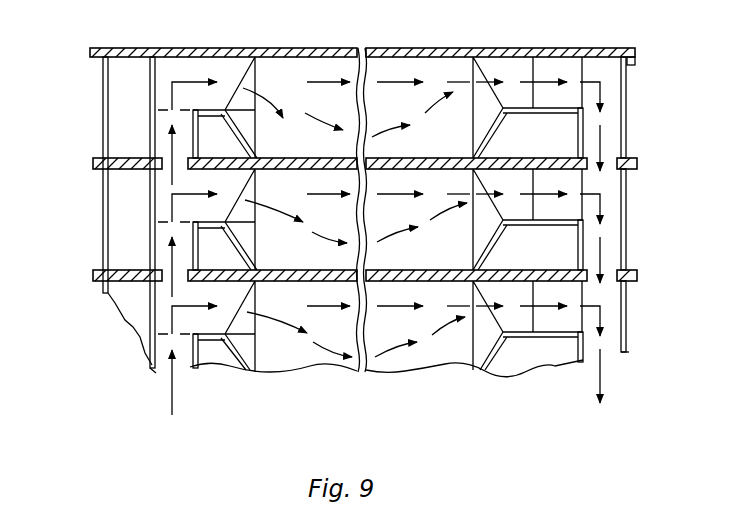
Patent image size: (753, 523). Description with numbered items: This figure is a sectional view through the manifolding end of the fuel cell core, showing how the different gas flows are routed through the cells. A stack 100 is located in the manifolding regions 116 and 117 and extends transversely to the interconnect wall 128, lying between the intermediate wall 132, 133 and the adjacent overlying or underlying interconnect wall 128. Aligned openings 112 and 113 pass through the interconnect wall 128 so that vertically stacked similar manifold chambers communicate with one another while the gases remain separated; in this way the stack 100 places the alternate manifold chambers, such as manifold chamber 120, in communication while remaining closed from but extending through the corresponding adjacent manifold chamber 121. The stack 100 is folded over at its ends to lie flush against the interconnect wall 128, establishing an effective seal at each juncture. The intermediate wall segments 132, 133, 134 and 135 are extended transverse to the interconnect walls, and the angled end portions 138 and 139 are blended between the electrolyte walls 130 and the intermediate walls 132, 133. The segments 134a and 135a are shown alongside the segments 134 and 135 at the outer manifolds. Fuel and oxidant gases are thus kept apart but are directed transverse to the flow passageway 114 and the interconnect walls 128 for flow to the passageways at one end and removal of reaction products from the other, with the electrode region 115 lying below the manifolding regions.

The stack 100 is at (190, 120).
The aligned opening 112 is at (160, 160).
The aligned opening 113 is at (619, 159).
The flow passageway 114 is at (402, 68).
The electrode region 115 is at (334, 369).
The manifolding region 116 is at (140, 346).
The manifolding region 117 is at (548, 371).
The manifold chamber 120 is at (196, 65).
The manifold chamber 121 is at (621, 82).
The interconnect wall 128 is at (90, 280).
The electrolyte wall 130 is at (388, 268).
The intermediate wall 132 is at (210, 110).
The intermediate wall 133 is at (520, 338).
The intermediate wall segment 134 is at (147, 184).
The left manifold outer wall 134a is at (103, 228).
The intermediate wall segment 135 is at (583, 240).
The right manifold lower wall 135a is at (627, 317).
The angled end portion 138 is at (231, 355).
The angled end portion 139 is at (500, 238).